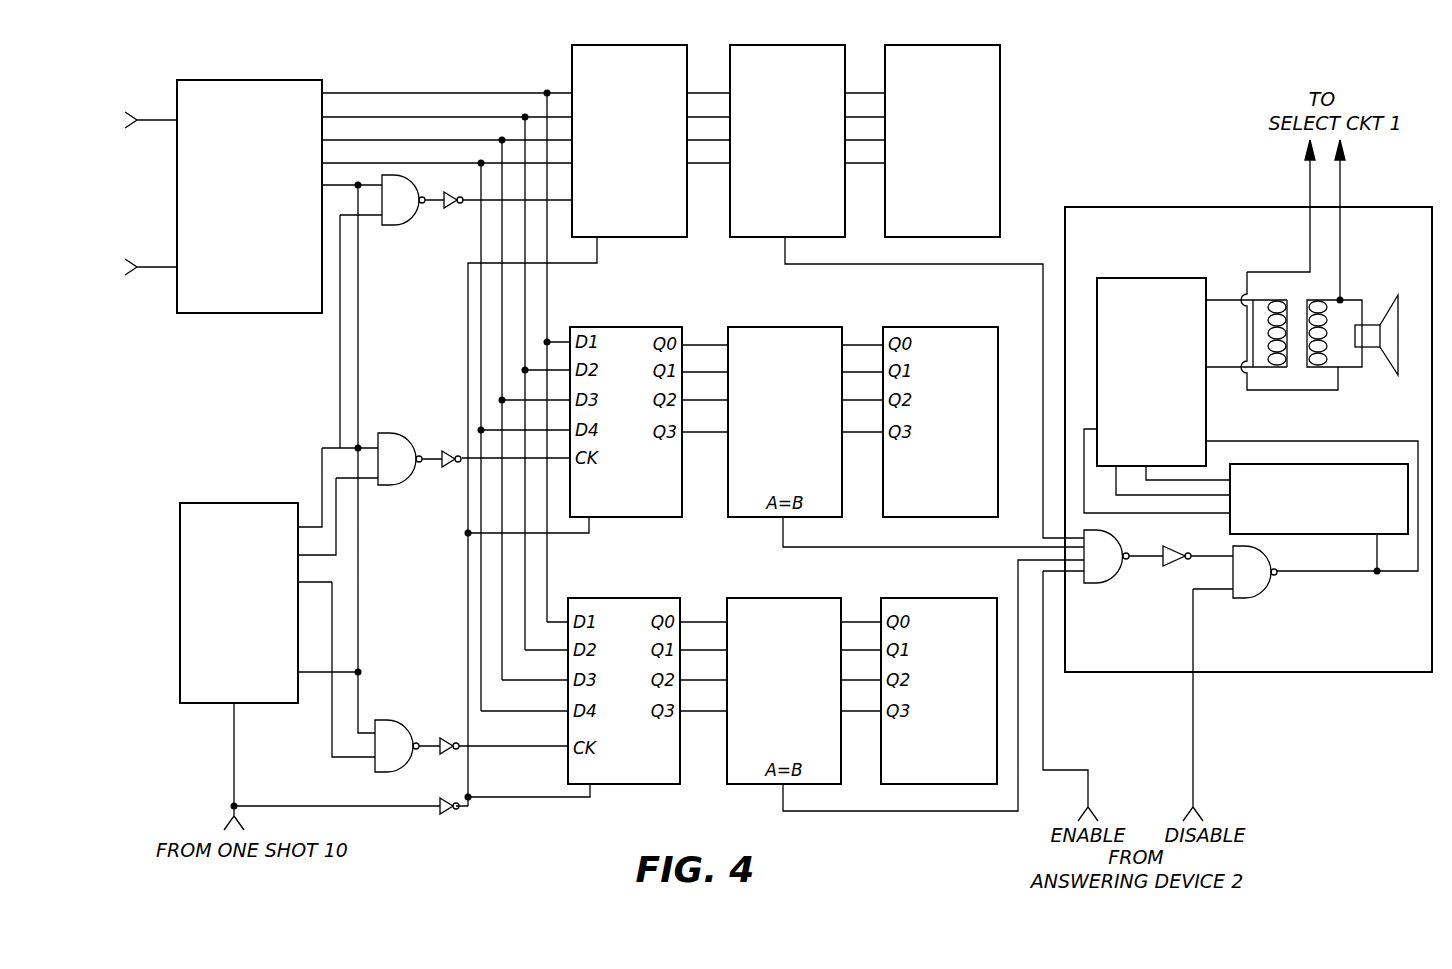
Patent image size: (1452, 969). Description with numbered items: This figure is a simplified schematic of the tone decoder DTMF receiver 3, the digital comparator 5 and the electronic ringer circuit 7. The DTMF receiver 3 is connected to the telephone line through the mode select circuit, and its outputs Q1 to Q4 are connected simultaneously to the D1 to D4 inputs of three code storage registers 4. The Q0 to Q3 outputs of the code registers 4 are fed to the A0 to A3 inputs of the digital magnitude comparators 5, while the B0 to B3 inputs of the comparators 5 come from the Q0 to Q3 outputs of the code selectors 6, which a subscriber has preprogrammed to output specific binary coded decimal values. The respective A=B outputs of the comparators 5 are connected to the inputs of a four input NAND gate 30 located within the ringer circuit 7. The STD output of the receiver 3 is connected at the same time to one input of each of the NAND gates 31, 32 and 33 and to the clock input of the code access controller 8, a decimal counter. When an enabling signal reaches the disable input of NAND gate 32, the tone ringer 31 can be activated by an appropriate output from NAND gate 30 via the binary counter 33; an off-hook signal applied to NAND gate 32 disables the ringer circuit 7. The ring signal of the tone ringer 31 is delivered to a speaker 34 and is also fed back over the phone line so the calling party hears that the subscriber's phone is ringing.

The DTMF receiver 3 is at (247, 80).
The code storage registers 4 is at (618, 45).
The digital magnitude comparators 5 is at (785, 45).
The code selectors 6 is at (930, 45).
The ringer circuit 7 is at (1100, 207).
The code access controller 8 is at (222, 503).
The four input NAND gate 30 is at (1101, 583).
The NAND gate / tone ringer 31 is at (399, 225).
The NAND gate 32 is at (395, 485).
The NAND gate / binary counter 33 is at (385, 720).
The speaker 34 is at (1382, 296).